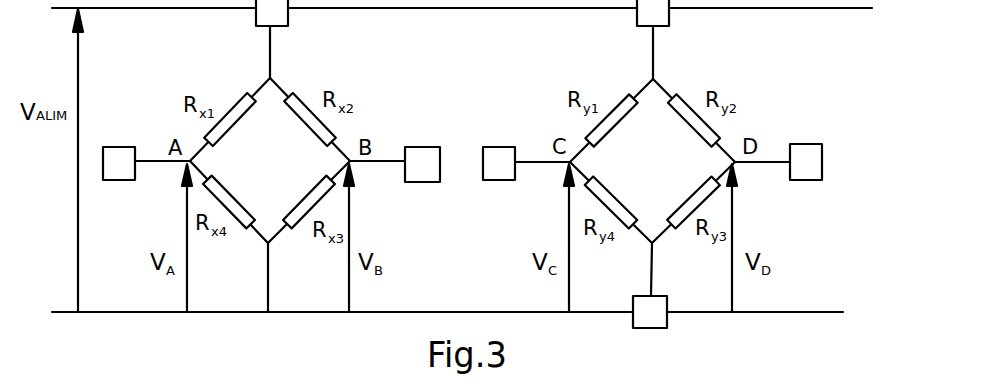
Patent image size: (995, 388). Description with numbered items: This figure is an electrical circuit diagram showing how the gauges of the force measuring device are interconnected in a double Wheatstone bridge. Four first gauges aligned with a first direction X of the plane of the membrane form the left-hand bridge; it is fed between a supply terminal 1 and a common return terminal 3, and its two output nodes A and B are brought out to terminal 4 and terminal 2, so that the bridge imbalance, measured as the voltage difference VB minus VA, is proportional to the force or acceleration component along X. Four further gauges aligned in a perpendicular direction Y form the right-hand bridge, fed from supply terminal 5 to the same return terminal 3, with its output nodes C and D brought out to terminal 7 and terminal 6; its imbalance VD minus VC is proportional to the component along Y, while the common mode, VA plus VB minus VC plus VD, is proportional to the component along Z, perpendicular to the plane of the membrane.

The supply terminal of first bridge 1 is at (272, 13).
The output terminal B of first bridge 2 is at (395, 164).
The common ground terminal 3 is at (650, 312).
The output terminal A of first bridge 4 is at (146, 163).
The supply terminal of second bridge 5 is at (653, 13).
The output terminal D of second bridge 6 is at (778, 162).
The output terminal C of second bridge 7 is at (526, 163).